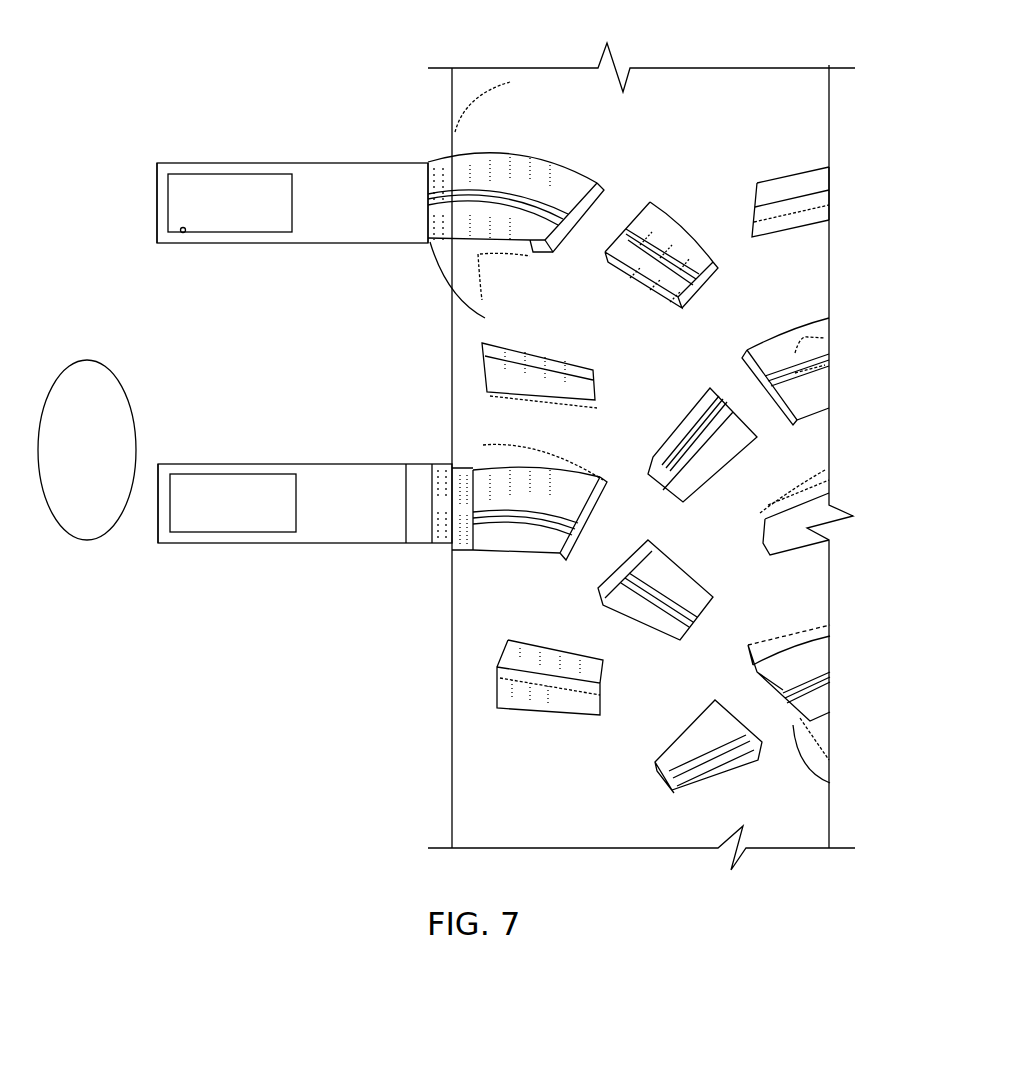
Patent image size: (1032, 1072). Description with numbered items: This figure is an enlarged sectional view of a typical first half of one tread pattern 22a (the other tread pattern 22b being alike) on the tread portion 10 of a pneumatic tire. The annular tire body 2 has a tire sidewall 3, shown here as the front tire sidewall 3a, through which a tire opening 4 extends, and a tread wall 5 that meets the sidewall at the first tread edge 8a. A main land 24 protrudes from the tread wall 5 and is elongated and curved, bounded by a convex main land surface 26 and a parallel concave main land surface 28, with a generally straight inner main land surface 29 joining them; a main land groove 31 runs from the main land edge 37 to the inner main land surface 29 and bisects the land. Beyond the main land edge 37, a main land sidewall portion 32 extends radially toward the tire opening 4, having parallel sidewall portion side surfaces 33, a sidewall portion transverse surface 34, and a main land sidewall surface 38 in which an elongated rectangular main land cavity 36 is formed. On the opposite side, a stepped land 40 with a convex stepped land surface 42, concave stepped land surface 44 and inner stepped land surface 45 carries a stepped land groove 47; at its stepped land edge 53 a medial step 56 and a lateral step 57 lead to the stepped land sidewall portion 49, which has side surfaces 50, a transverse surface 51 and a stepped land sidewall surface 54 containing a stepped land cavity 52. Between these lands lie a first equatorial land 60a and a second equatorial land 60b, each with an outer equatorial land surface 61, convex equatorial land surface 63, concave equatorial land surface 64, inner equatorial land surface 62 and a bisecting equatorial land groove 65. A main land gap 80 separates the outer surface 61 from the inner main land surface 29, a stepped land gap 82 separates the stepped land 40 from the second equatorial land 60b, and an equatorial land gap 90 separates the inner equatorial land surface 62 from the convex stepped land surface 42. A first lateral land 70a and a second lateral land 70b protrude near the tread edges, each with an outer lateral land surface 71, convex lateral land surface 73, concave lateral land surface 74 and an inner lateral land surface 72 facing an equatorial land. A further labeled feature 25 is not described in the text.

The tread portion 10 is at (298, 45).
The annular tire body 2 is at (607, 439).
The interior space 3 is at (386, 328).
The front tire sidewall 3a is at (448, 85).
The tire opening 4 is at (90, 360).
The tread wall 5 is at (726, 112).
The first tread edge 8a is at (499, 100).
The tread pattern 22a is at (265, 196).
The tread pattern 22b is at (263, 516).
The main land 24 is at (669, 450).
The outer face 25 is at (812, 632).
The convex main land surface 26 is at (565, 170).
The concave main land surface 28 is at (500, 285).
The inner main land surface 29 is at (583, 190).
The main land groove 31 is at (478, 185).
The main land sidewall portion 32 is at (222, 248).
The sidewall portion side surfaces 33 is at (212, 163).
The sidewall portion transverse surface 34 is at (150, 172).
The main land cavity 36 is at (183, 233).
The main land edge 37 is at (428, 172).
The main land sidewall surface 38 is at (348, 207).
The stepped land 40 is at (656, 438).
The convex stepped land surface 42 is at (510, 478).
The concave stepped land surface 44 is at (517, 560).
The inner stepped land surface 45 is at (595, 505).
The stepped land groove 47 is at (530, 500).
The stepped land sidewall portion 49 is at (210, 546).
The sidewall portion side surfaces 50 is at (268, 464).
The sidewall portion transverse surface 51 is at (158, 545).
The stepped land cavity 52 is at (188, 474).
The stepped land edge 53 is at (432, 540).
The stepped land sidewall surface 54 is at (349, 515).
The medial step 56 is at (452, 462).
The lateral step 57 is at (410, 464).
The first equatorial land 60a is at (687, 490).
The second equatorial land 60b is at (675, 514).
The outer equatorial land surface 61 is at (615, 275).
The inner equatorial land surface 62 is at (700, 300).
The convex equatorial land surface 63 is at (680, 205).
The concave equatorial land surface 64 is at (668, 300).
The equatorial land groove 65 is at (683, 206).
The first lateral land 70a is at (676, 452).
The second lateral land 70b is at (595, 390).
The outer lateral land surface 71 is at (490, 380).
The inner lateral land surface 72 is at (748, 230).
The convex lateral land surface 73 is at (770, 178).
The concave lateral land surface 74 is at (778, 222).
The main land gap 80 is at (610, 246).
The stepped land gap 82 is at (756, 412).
The equatorial land gap 90 is at (736, 332).